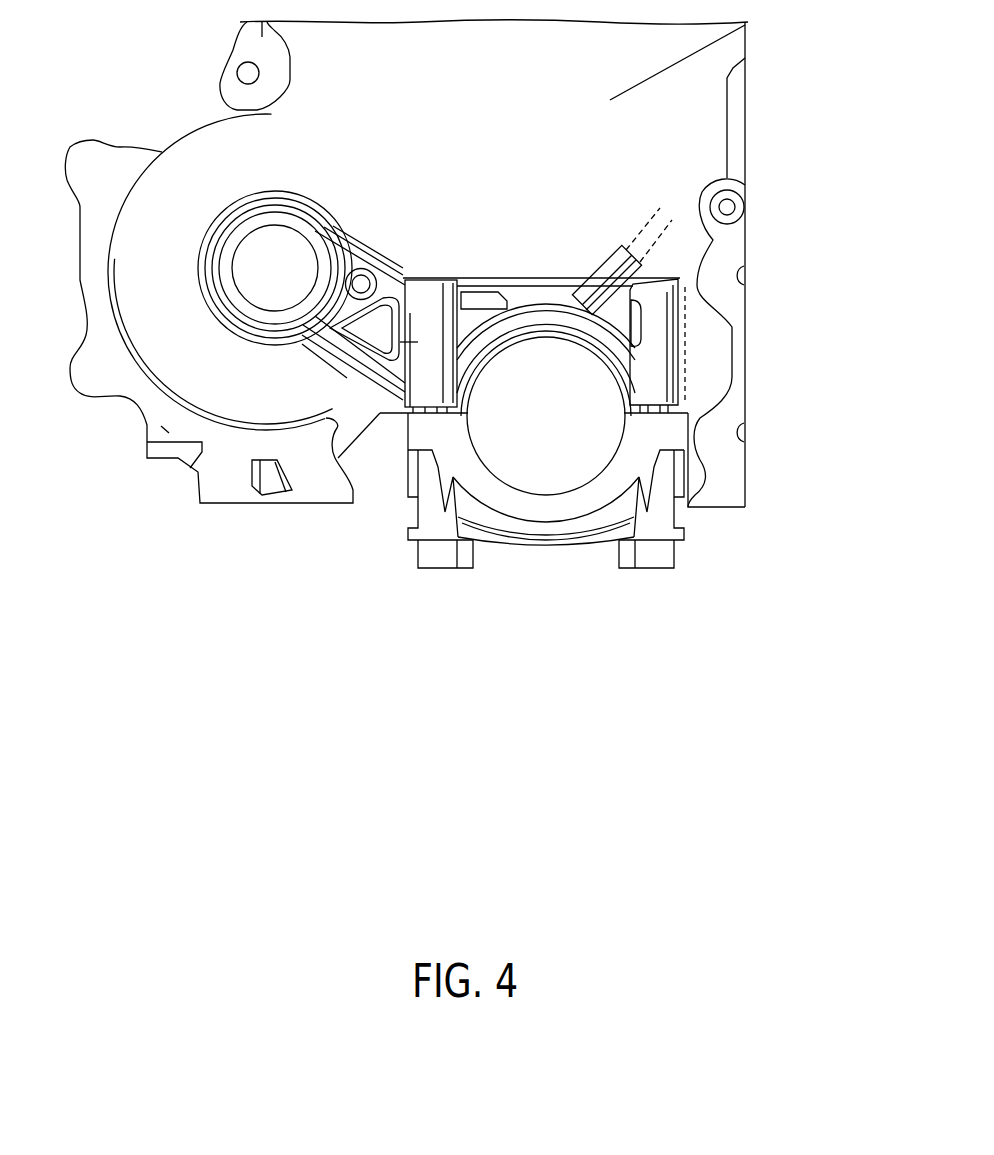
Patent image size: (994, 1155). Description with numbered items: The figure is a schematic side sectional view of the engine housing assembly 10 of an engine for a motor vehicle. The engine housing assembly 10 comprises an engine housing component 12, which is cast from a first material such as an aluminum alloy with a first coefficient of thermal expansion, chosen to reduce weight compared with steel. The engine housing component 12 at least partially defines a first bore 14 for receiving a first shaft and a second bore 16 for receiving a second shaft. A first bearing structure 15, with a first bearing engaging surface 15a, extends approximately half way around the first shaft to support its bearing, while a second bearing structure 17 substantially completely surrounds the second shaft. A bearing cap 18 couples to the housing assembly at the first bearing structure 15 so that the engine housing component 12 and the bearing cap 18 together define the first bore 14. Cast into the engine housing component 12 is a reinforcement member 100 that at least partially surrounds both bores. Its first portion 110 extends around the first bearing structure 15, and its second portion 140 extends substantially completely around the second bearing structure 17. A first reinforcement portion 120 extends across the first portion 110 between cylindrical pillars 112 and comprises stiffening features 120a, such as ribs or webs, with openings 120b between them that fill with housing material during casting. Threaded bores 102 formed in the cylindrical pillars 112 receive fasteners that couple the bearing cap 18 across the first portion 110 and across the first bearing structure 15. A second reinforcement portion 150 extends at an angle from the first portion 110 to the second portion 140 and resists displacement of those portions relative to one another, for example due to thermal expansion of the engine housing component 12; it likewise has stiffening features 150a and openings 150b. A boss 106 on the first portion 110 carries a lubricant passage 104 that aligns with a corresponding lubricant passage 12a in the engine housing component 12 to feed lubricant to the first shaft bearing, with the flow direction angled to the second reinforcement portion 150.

The engine housing assembly 10 is at (756, 163).
The engine housing component 12 is at (745, 22).
The lubricant passage 12a is at (663, 215).
The first bore 14 is at (637, 387).
The first bearing structure 15 is at (547, 310).
The first bearing engaging surface 15a is at (655, 270).
The second bore 16 is at (222, 305).
The second bearing structure 17 is at (262, 217).
The bearing cap 18 is at (633, 460).
The reinforcement member 100 is at (655, 314).
The threaded bores 102 is at (665, 420).
The lubricant passage 104 is at (593, 287).
The boss 106 is at (613, 268).
The first portion 110 is at (635, 350).
The cylindrical pillars 112 is at (653, 300).
The first reinforcement portion 120 is at (517, 279).
The stiffening features 120a is at (535, 279).
The openings 120b is at (478, 280).
The second portion 140 is at (217, 220).
The second reinforcement portion 150 is at (387, 262).
The stiffening features 150a is at (403, 283).
The openings 150b is at (350, 250).